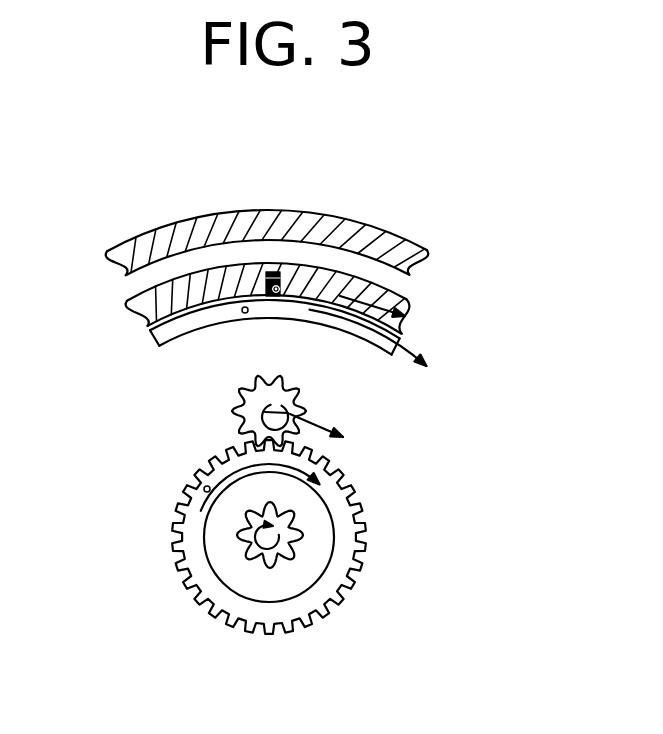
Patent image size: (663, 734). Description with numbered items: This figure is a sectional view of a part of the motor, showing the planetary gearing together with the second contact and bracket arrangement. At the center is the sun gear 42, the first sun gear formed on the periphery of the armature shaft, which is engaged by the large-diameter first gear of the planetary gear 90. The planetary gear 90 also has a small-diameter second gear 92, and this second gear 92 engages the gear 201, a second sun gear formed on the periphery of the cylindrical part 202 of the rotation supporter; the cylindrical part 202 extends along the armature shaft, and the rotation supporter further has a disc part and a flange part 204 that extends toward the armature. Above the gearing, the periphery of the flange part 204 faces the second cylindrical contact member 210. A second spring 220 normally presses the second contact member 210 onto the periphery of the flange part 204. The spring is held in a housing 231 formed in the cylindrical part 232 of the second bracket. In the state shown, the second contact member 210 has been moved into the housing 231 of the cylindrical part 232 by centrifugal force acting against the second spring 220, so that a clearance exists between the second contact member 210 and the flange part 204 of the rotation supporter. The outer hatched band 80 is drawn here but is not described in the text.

The outer ring 80 is at (195, 231).
The cylindrical part 232 is at (237, 272).
The second spring 220 is at (272, 280).
The housing 231 is at (283, 277).
The second cylindrical contact member 210 is at (282, 293).
The flange part 204 is at (198, 322).
The planetary gear 90 is at (280, 398).
The second gear 92 is at (290, 433).
The gear 201 is at (357, 561).
The cylindrical part 202 is at (340, 525).
The sun gear 42 is at (243, 542).